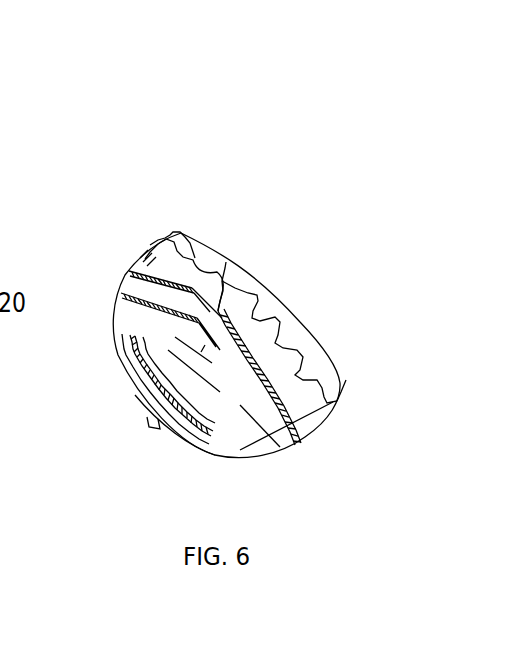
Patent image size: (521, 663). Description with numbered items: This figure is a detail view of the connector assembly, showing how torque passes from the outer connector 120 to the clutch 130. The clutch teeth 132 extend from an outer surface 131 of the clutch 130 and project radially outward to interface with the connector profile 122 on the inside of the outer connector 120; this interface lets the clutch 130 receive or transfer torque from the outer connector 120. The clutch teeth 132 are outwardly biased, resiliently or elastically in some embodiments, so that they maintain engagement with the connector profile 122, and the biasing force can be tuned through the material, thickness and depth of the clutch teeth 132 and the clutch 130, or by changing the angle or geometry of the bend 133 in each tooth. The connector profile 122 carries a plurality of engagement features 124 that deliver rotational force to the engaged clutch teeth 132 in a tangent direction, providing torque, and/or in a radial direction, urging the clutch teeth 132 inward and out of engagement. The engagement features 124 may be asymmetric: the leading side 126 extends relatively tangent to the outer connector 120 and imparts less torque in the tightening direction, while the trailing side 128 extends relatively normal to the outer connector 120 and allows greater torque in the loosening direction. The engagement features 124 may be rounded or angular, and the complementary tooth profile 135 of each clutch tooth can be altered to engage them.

The outer connector 120 is at (181, 233).
The connector profile 122 is at (195, 260).
The engagement feature 124 is at (183, 252).
The leading side 126 is at (172, 256).
The trailing side 128 is at (205, 258).
The clutch 130 is at (240, 437).
The outer surface 131 is at (343, 383).
The clutch teeth 132 is at (222, 341).
The bend 133 is at (258, 378).
The tooth profile 135 is at (226, 284).